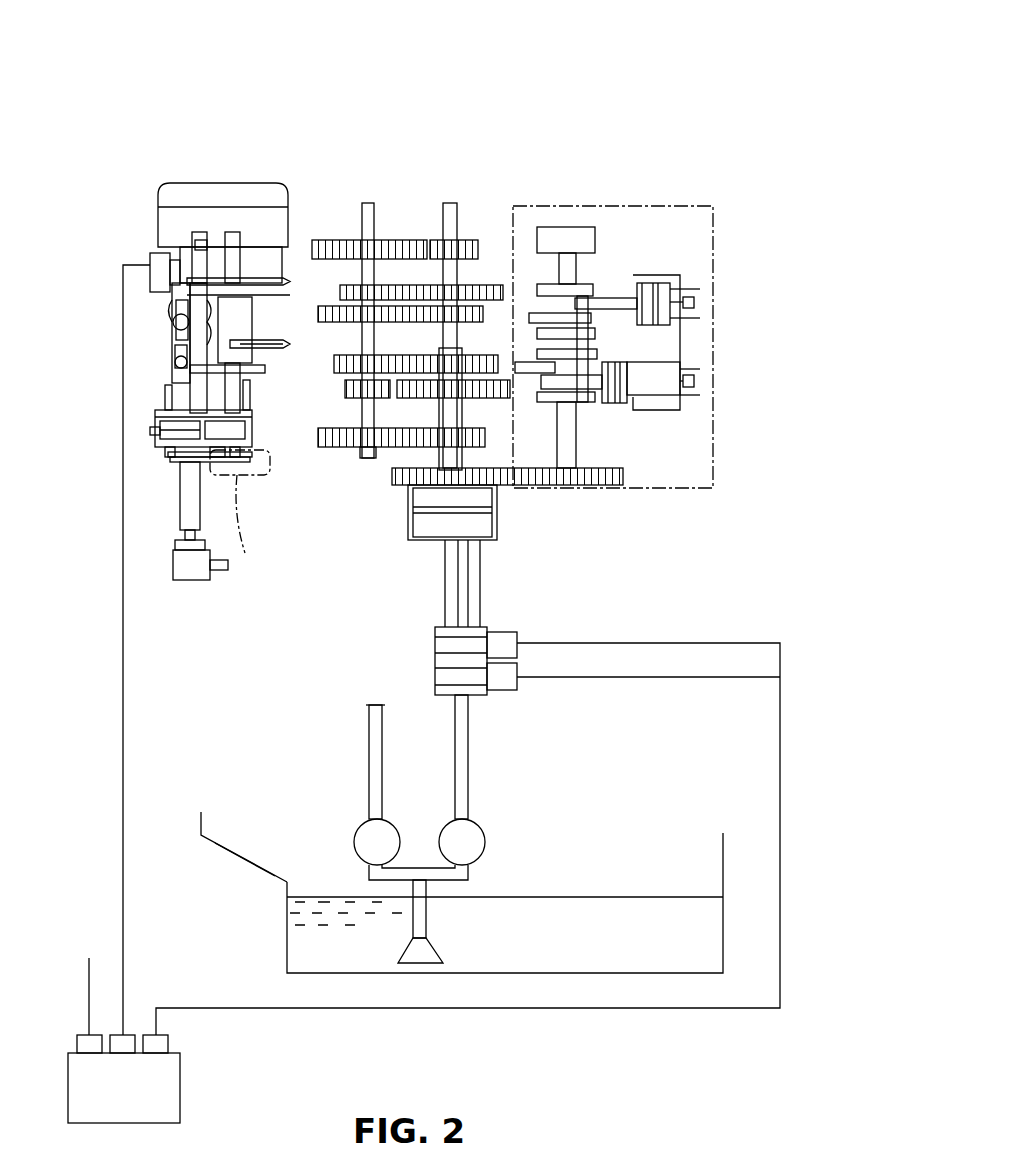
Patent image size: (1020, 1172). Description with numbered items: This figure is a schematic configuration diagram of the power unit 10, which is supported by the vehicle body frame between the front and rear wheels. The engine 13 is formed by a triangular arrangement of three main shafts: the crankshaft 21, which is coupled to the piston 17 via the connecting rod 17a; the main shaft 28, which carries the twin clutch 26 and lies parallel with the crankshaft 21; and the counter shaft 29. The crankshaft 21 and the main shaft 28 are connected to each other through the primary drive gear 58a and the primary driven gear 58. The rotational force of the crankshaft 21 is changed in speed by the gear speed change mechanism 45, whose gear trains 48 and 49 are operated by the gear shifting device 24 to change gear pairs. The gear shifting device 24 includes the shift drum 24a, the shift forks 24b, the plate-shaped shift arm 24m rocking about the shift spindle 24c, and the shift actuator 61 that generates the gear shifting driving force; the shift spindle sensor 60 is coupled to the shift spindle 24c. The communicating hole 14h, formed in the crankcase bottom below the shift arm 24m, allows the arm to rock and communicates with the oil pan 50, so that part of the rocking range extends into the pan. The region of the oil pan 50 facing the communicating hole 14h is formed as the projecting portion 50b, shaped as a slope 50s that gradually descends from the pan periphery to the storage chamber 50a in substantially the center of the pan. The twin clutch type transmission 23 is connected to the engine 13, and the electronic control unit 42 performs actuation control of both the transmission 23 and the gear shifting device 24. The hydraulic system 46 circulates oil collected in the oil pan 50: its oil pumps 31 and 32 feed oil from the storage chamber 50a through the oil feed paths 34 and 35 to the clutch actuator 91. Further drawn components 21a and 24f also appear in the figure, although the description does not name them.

The power unit 10 is at (218, 85).
The engine 13 is at (718, 244).
The communicating hole 14h is at (241, 512).
The piston 17 is at (655, 275).
The connecting rod 17a is at (607, 300).
The crankshaft 21 is at (565, 270).
The differential case 21a is at (545, 227).
The twin clutch type transmission 23 is at (655, 545).
The gear shifting device 24 is at (285, 155).
The shift drum 24a is at (175, 330).
The shift forks 24b is at (290, 295).
The shift spindle 24c is at (185, 490).
The fuel injector 24f is at (195, 240).
The shift arm 24m is at (175, 460).
The twin clutch 26 is at (500, 500).
The main shaft 28 is at (495, 488).
The counter shaft 29 is at (362, 455).
The oil pump 31 is at (355, 835).
The oil pump 32 is at (485, 835).
The oil feed path 34 is at (370, 765).
The oil feed path 35 is at (468, 760).
The electronic control unit 42 is at (180, 1090).
The gear speed change mechanism 45 is at (470, 238).
The hydraulic system 46 is at (527, 735).
The gear train 48 is at (437, 238).
The gear train 49 is at (348, 238).
The oil pan 50 is at (648, 977).
The storage chamber 50a is at (485, 962).
The projecting portion 50b is at (213, 840).
The slope 50s is at (255, 845).
The primary driven gear 58 is at (425, 500).
The primary drive gear 58a is at (625, 478).
The shift spindle sensor 60 is at (178, 572).
The shift actuator 61 is at (150, 280).
The clutch actuator 91 is at (430, 645).